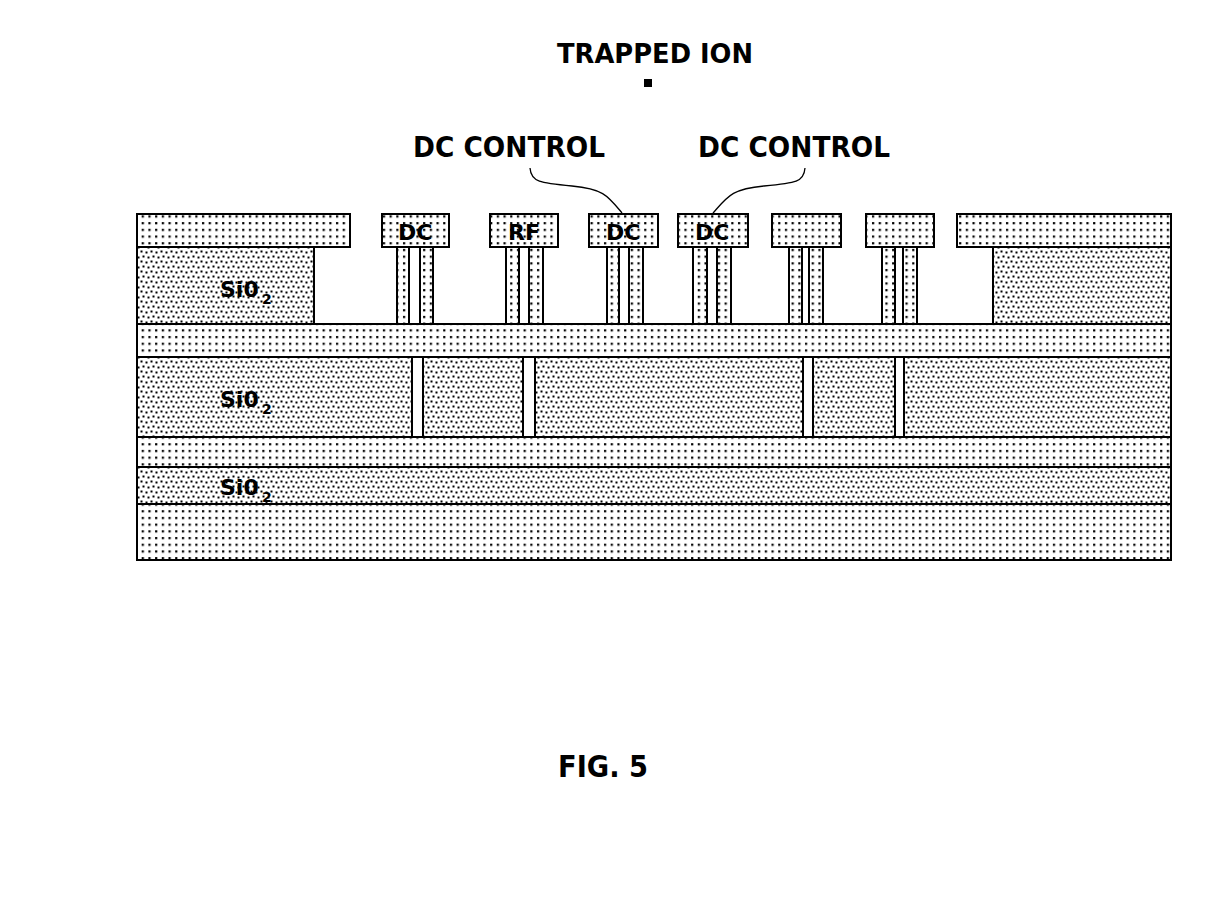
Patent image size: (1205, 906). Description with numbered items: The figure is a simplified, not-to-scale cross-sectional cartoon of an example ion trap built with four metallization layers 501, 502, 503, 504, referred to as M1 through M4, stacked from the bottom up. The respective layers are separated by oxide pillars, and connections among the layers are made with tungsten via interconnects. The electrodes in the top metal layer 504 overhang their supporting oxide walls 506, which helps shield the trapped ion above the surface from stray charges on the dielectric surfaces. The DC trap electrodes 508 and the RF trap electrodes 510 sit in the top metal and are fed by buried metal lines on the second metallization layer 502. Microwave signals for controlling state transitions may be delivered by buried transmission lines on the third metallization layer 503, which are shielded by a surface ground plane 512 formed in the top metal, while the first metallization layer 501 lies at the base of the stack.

The first metallization layer 501 is at (137, 540).
The second metallization layer 502 is at (137, 457).
The third metallization layer 503 is at (137, 345).
The fourth metallization layer 504 is at (137, 232).
The oxide walls 506 is at (397, 300).
The DC trap electrode 508 is at (928, 213).
The RF trap electrode 510 is at (813, 213).
The surface ground plane 512 is at (1017, 213).